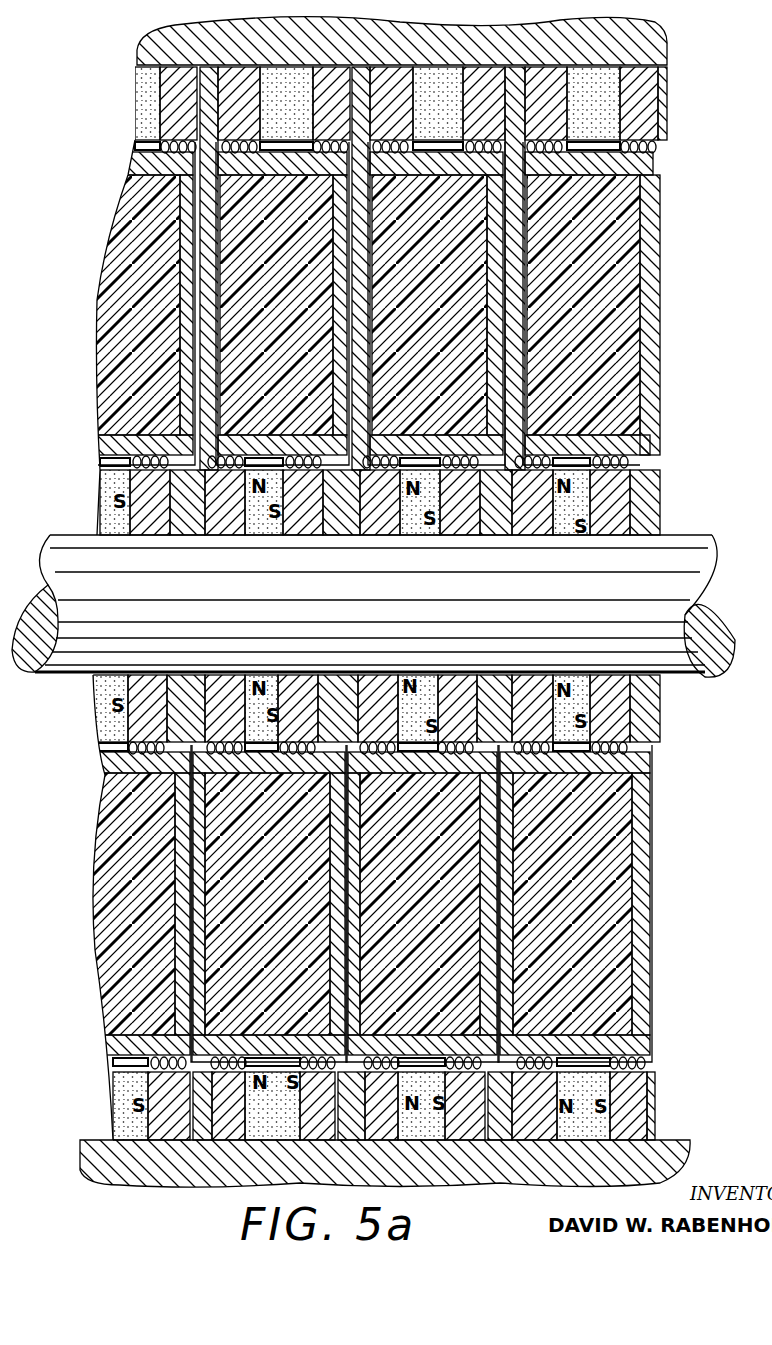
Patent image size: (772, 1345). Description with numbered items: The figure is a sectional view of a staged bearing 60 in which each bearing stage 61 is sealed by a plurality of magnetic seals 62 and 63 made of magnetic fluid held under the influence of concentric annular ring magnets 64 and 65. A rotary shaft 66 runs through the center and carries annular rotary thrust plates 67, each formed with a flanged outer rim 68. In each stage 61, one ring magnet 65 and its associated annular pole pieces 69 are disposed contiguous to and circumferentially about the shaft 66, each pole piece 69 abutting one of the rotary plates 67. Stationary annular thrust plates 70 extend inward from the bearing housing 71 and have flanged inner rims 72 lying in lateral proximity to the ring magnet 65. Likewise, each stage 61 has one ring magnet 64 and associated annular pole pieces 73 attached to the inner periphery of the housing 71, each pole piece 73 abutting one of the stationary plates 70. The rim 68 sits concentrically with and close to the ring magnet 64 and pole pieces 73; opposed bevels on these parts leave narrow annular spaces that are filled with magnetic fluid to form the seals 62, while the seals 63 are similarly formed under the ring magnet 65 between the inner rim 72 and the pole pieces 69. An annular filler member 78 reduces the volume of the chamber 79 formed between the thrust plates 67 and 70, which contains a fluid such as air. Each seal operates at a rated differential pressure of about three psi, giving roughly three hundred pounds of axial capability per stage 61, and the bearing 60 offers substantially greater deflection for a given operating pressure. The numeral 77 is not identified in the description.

The staged bearing 60 is at (415, 536).
The bearing stage 61 is at (426, 575).
The magnetic seal 62 is at (653, 152).
The magnetic seal 63 is at (630, 467).
The ring magnet 64 is at (354, 603).
The ring magnet 65 is at (494, 606).
The rotary shaft 66 is at (700, 543).
The rotary thrust plate 67 is at (660, 305).
The flanged outer rim 68 is at (653, 163).
The annular pole piece 69 is at (571, 502).
The stationary thrust plate 70 is at (515, 72).
The bearing housing 71 is at (163, 40).
The flanged inner rim 72 is at (630, 450).
The annular pole piece 73 is at (408, 72).
The spring 77 is at (158, 450).
The annular filler member 78 is at (502, 605).
The chamber 79 is at (630, 910).